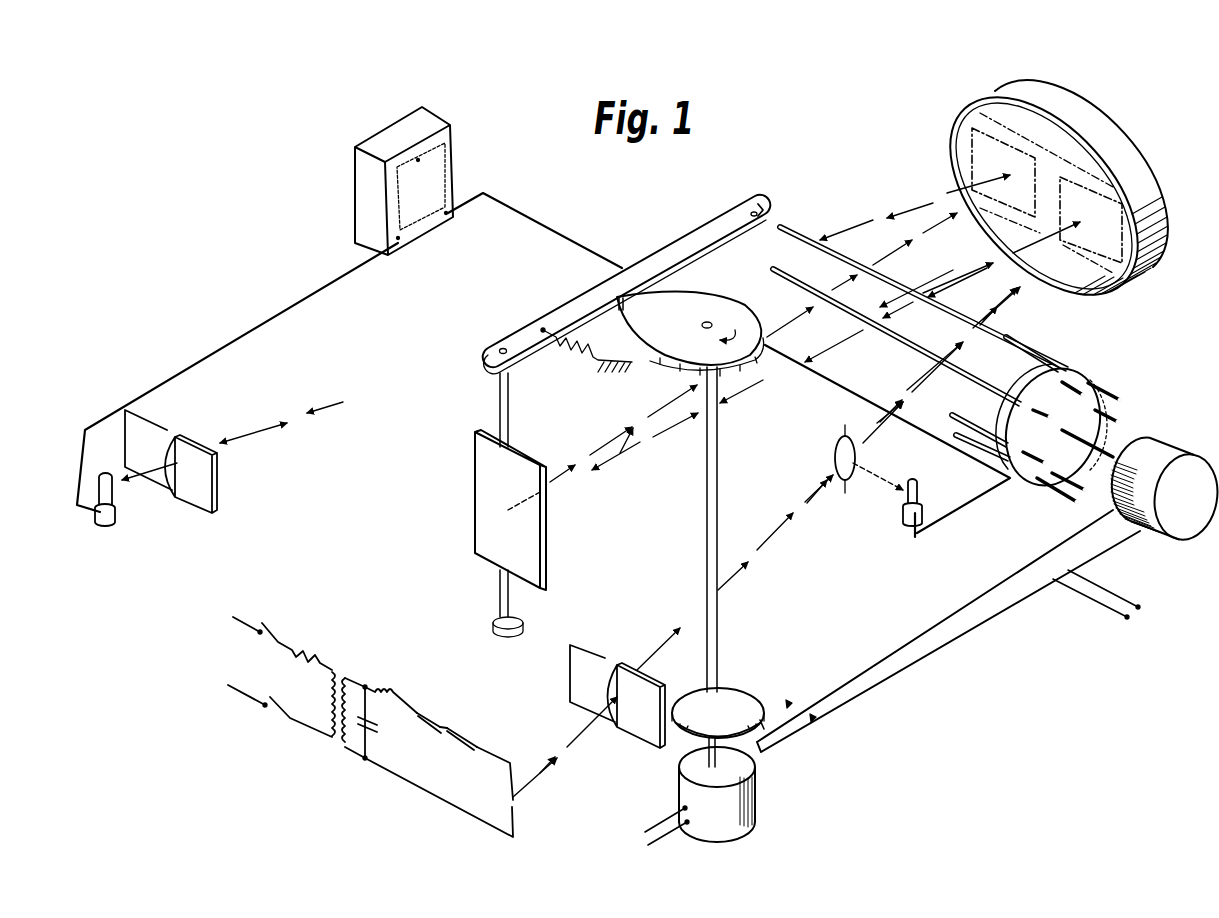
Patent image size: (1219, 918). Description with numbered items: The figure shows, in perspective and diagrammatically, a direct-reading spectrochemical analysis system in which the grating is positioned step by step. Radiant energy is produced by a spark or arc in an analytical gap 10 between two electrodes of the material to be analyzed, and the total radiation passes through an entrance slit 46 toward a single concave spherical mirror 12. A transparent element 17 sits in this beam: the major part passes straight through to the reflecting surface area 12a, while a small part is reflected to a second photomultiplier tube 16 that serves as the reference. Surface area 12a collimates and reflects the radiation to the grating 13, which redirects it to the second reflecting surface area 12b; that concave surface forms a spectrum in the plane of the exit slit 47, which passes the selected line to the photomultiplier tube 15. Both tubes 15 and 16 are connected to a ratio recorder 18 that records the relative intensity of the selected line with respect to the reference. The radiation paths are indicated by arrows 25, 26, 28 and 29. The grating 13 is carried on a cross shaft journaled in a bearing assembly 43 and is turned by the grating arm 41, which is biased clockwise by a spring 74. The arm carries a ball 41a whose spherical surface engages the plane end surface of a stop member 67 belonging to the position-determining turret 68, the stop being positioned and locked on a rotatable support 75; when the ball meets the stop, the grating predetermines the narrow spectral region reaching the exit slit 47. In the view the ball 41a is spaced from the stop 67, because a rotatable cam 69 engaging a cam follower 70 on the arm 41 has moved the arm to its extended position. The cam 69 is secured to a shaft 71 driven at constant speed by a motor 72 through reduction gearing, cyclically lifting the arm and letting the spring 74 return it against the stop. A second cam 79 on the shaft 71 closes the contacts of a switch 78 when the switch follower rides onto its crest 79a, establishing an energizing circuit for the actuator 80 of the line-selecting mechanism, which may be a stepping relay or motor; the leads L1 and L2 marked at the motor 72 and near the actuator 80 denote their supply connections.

The analytical gap 10 is at (517, 805).
The concave spherical mirror 12 is at (1105, 113).
The reflecting surface area 12a is at (1107, 207).
The second reflecting surface area 12b is at (990, 157).
The grating 13 is at (545, 543).
The photomultiplier tube 15 is at (108, 473).
The second photomultiplier tube 16 is at (903, 507).
The transparent element 17 is at (837, 445).
The ratio recorder 18 is at (452, 160).
The light beam 25 is at (772, 537).
The light beam 26 is at (778, 372).
The light beam 28 is at (893, 252).
The light beam 29 is at (343, 402).
The grating arm 41 is at (678, 240).
The ball 41a is at (767, 213).
The bearing assembly 43 is at (492, 625).
The entrance slit 46 is at (615, 717).
The exit slit 47 is at (180, 493).
The stop member 67 is at (793, 232).
The turret 68 is at (1148, 384).
The cam 69 is at (720, 305).
The cam follower 70 is at (620, 312).
The shaft 71 is at (717, 492).
The motor 72 is at (755, 798).
The spring 74 is at (593, 355).
The rotatable support 75 is at (1067, 368).
The switch 78 is at (780, 743).
The cam 79 is at (728, 695).
The crest 79a is at (762, 720).
The actuator 80 is at (1195, 518).
The lead wire L1 is at (1097, 607).
The lead wire L2 is at (1127, 597).